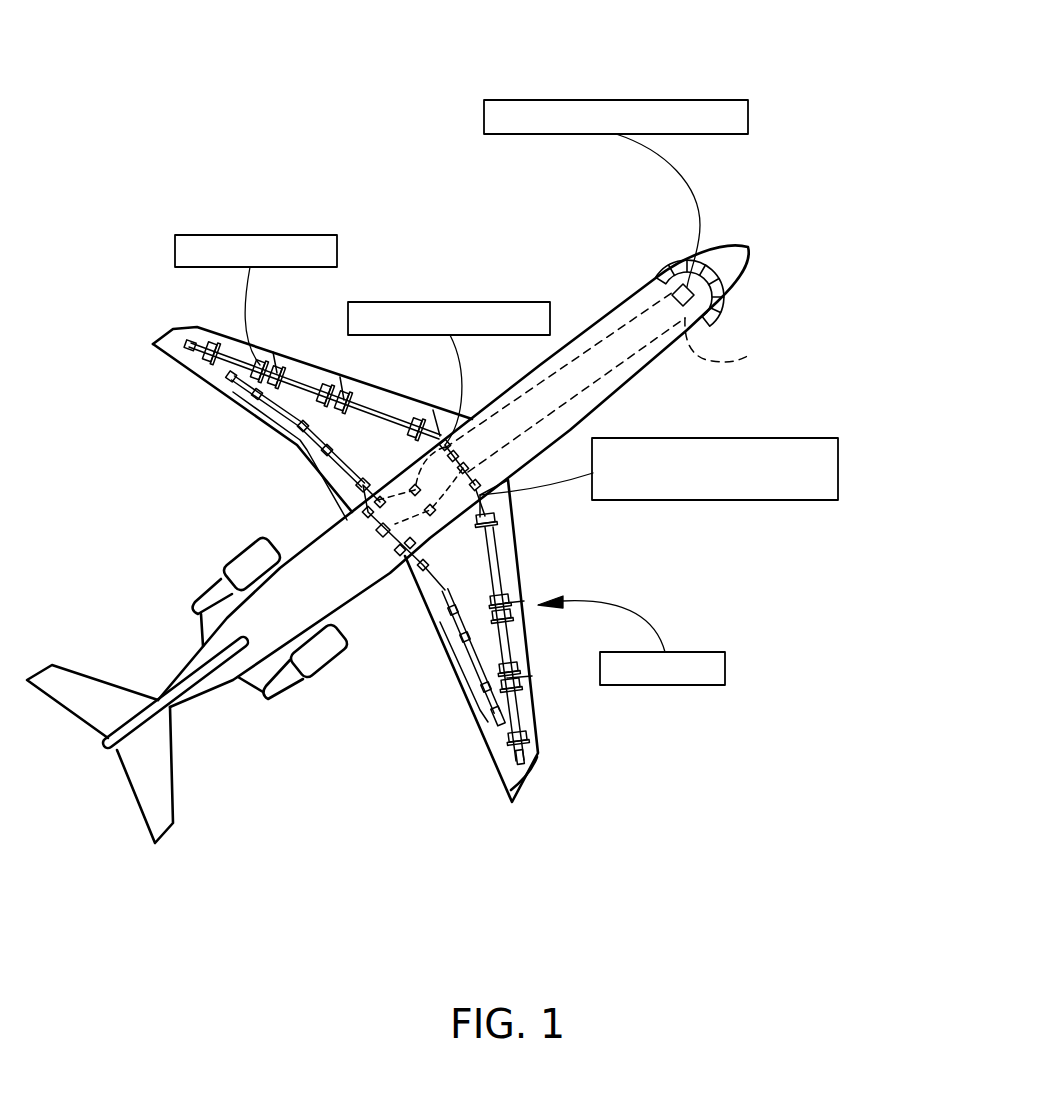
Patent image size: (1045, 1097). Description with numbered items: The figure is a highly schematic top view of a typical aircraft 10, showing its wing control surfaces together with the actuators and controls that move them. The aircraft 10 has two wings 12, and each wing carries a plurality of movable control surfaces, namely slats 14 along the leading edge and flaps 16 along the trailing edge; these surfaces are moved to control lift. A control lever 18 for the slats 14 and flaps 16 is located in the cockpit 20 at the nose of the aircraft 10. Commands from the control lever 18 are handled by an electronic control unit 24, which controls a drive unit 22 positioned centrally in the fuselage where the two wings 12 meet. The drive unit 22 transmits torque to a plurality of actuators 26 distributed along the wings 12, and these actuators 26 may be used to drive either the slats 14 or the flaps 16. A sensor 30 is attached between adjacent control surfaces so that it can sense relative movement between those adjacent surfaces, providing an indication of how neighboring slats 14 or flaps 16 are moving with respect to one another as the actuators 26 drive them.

The aircraft 10 is at (762, 213).
The wings 12 is at (173, 328).
The slats 14 is at (517, 560).
The flaps 16 is at (398, 590).
The control lever 18 is at (648, 100).
The cockpit 20 is at (742, 349).
The drive unit 22 is at (467, 302).
The electronic control unit 24 is at (838, 472).
The actuators 26 is at (260, 235).
The sensor 30 is at (658, 685).